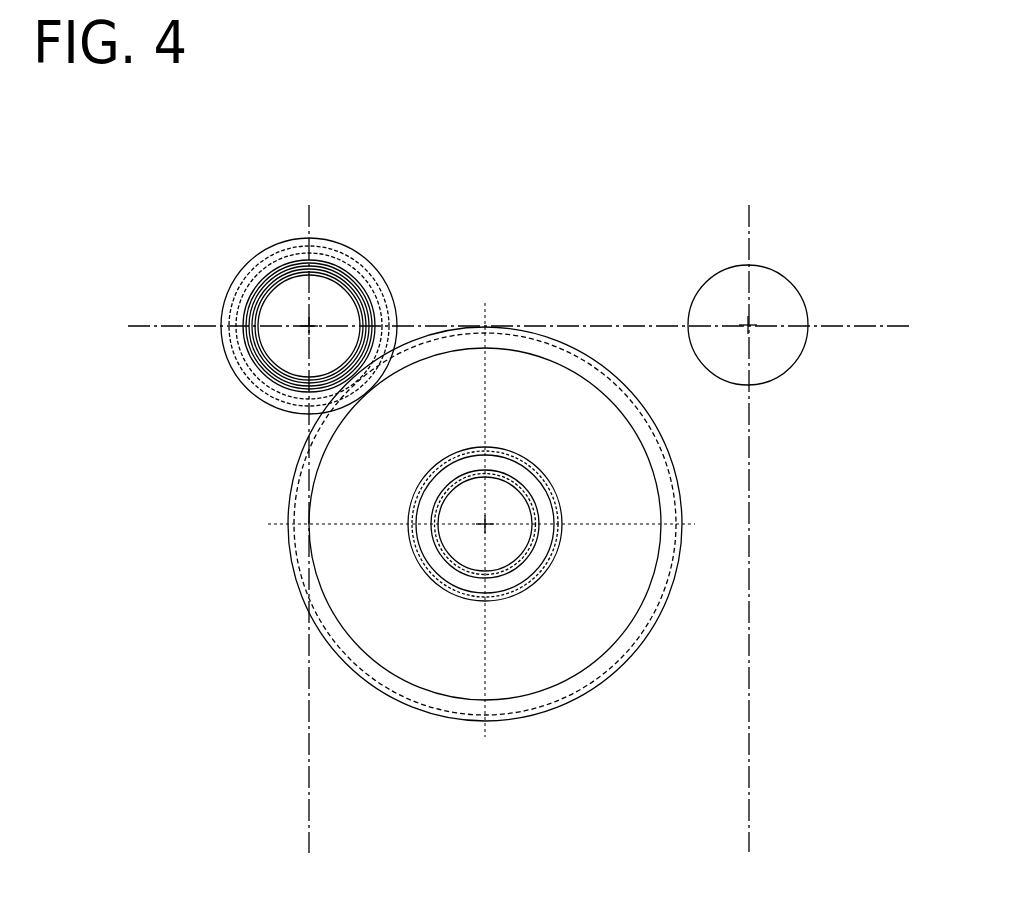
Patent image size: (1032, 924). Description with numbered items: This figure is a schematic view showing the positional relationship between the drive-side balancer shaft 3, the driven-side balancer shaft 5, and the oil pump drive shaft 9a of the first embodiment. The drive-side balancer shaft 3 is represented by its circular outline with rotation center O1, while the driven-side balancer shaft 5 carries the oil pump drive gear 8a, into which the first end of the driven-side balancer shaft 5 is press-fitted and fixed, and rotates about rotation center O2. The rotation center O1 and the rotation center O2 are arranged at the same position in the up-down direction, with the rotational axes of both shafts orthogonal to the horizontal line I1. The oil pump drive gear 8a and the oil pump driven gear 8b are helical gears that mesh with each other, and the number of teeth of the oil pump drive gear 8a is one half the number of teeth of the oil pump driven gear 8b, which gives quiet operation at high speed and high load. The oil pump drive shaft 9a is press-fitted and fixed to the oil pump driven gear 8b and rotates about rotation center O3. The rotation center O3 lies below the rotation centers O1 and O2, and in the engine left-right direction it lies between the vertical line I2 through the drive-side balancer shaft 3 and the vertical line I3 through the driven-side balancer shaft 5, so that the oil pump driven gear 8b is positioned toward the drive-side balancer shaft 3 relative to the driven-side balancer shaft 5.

The drive-side balancer shaft 3 is at (773, 268).
The driven-side balancer shaft 5 is at (283, 342).
The oil pump drive gear 8a is at (353, 248).
The oil pump driven gear 8b is at (292, 571).
The oil pump drive shaft 9a is at (503, 533).
The rotation center of the drive-side balancer shaft O1 is at (748, 325).
The rotation center of the driven-side balancer shaft O2 is at (308, 325).
The rotation center of the oil pump drive shaft O3 is at (484, 526).
The line I1 is at (155, 327).
The line I2 is at (752, 655).
The line I3 is at (308, 780).